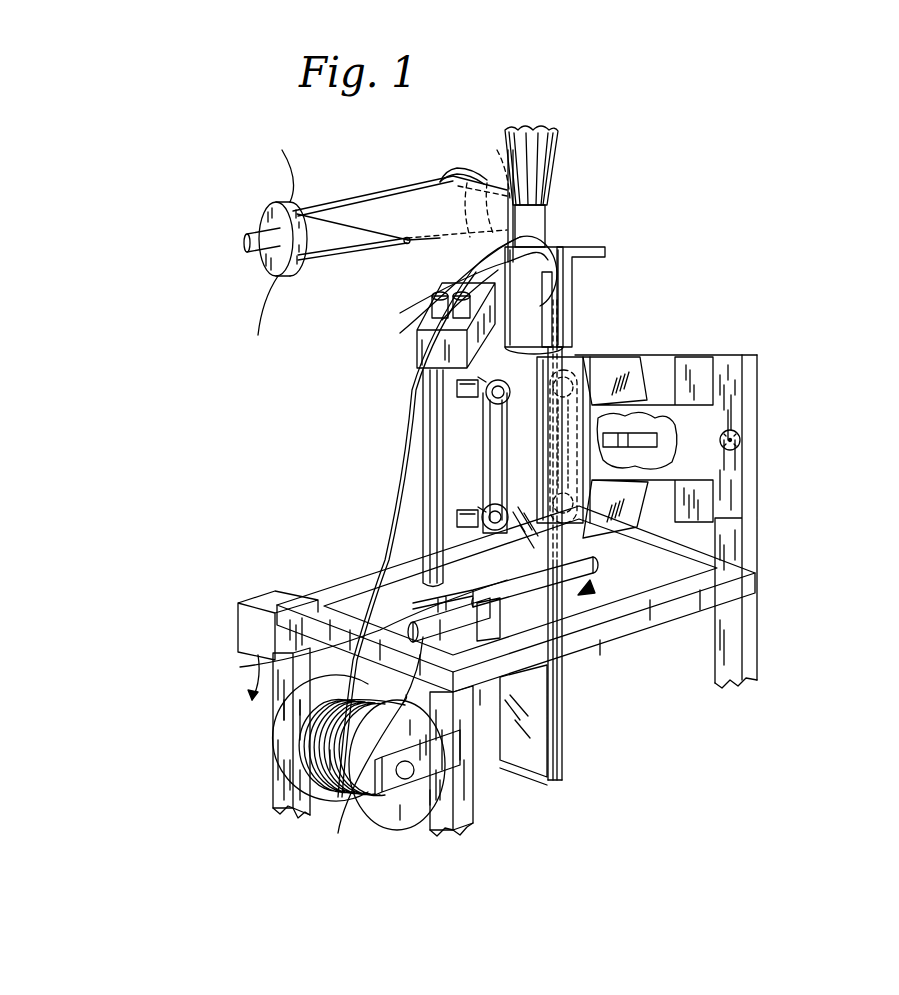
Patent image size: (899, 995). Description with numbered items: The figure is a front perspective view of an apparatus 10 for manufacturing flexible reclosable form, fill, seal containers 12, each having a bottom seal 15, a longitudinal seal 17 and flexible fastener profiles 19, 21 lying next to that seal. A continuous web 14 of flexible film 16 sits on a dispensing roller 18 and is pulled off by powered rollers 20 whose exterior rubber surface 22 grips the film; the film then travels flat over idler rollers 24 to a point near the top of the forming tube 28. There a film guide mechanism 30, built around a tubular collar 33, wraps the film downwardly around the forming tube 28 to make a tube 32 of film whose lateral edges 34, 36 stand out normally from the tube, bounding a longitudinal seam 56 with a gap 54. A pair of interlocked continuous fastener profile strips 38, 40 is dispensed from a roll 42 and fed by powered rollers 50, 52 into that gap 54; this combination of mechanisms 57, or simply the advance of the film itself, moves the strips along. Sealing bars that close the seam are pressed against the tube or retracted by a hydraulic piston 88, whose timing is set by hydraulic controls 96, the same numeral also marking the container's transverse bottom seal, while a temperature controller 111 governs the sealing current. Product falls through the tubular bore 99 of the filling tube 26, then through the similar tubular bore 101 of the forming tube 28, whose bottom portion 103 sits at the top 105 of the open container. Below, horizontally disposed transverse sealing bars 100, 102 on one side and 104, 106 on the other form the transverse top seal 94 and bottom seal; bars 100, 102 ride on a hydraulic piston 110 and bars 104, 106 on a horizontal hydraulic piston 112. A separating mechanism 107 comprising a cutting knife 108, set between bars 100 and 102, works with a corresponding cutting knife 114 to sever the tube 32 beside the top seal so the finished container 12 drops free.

The apparatus 10 is at (712, 300).
The flexible reclosable container 12 is at (556, 690).
The continuous web 14 is at (330, 200).
The bottom seal 15 is at (568, 782).
The flexible film 16 is at (440, 238).
The longitudinal seal 17 is at (563, 745).
The dispensing roller 18 is at (258, 335).
The flexible fastener profile 19 is at (562, 778).
The powered rollers 20 is at (488, 392).
The flexible fastener profile 21 is at (557, 760).
The exterior rubber surface 22 is at (492, 374).
The idler rollers 24 is at (460, 262).
The filling tube 26 is at (550, 200).
The forming tube 28 is at (560, 218).
The film guide mechanism 30 is at (558, 245).
The tube of flexible film 32 is at (530, 358).
The tubular collar 33 is at (500, 398).
The lateral edge 34 is at (500, 290).
The lateral edge 36 is at (582, 300).
The continuous fastener profile strip 38 is at (530, 535).
The continuous fastener profile strip 40 is at (390, 500).
The roll 42 is at (390, 830).
The powered roller 50 is at (400, 313).
The powered roller 52 is at (400, 333).
The gap 54 is at (605, 250).
The longitudinal seam 56 is at (578, 282).
The combination of mechanisms 57 is at (380, 477).
The hydraulic piston 88 is at (655, 433).
The transverse top seal 94 is at (563, 712).
The hydraulic controls 96 is at (740, 440).
The tubular bore 99 is at (536, 118).
The transverse sealing bar 100 is at (547, 620).
The tubular bore 101 is at (497, 150).
The transverse sealing bar 102 is at (560, 640).
The bottom portion 103 is at (413, 560).
The transverse sealing bar 104 is at (600, 597).
The top 105 is at (500, 548).
The transverse sealing bar 106 is at (600, 600).
The mechanism 107 is at (600, 593).
The cutting knife 108 is at (240, 667).
The hydraulic piston 110 is at (347, 815).
The temperature controller 111 is at (237, 612).
The hydraulic piston 112 is at (613, 572).
The cutting knife 114 is at (620, 573).